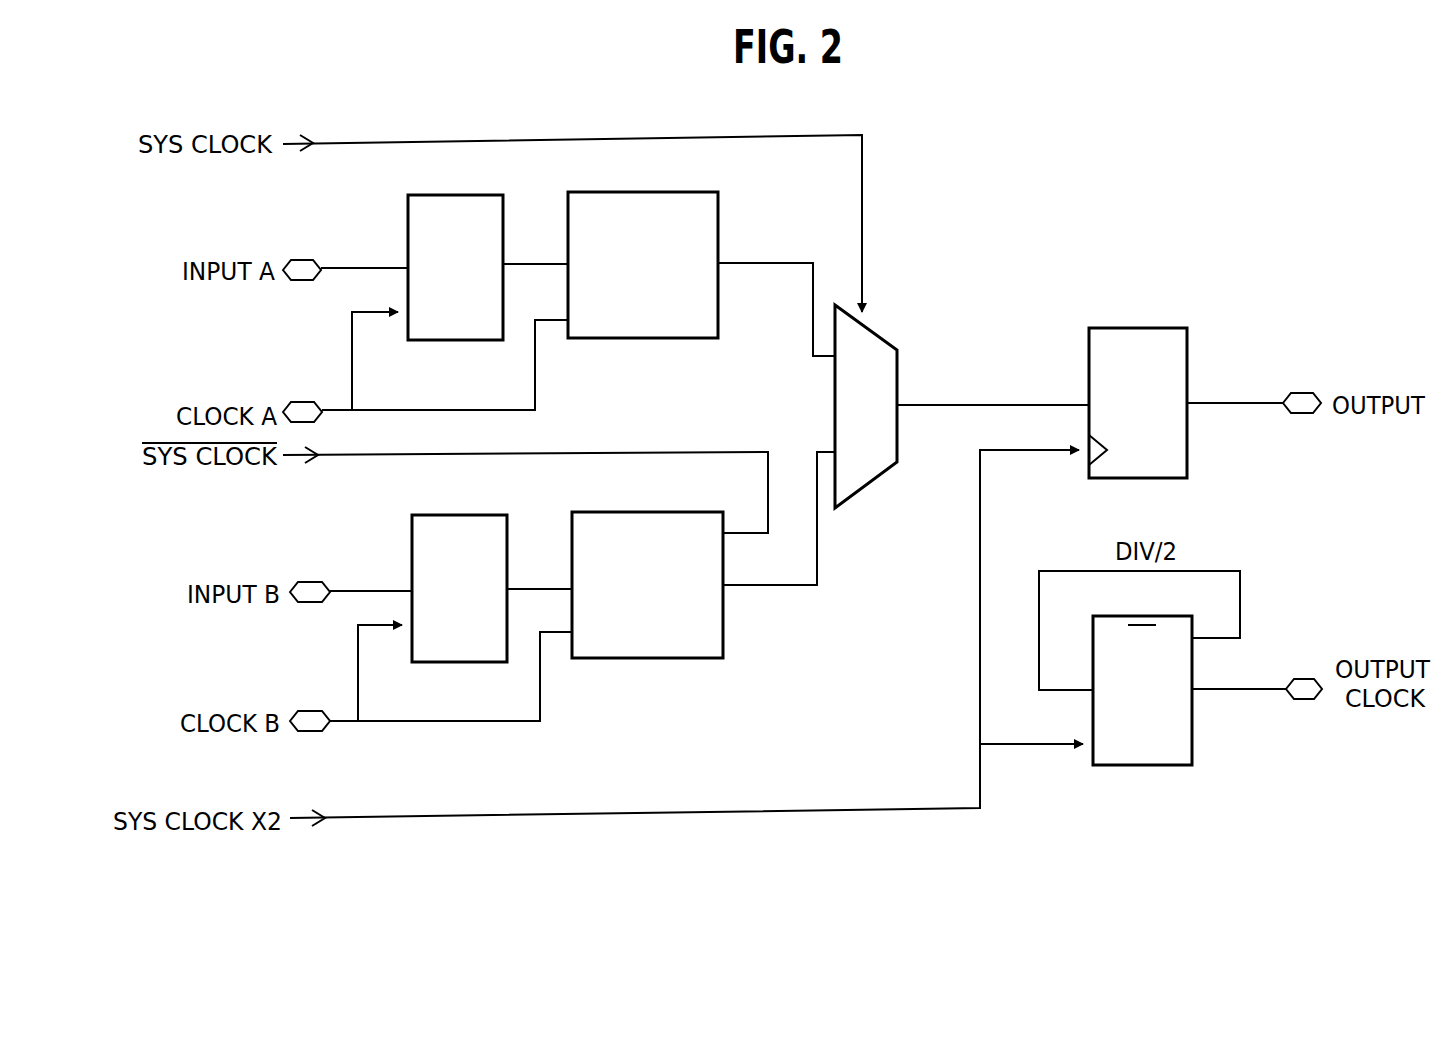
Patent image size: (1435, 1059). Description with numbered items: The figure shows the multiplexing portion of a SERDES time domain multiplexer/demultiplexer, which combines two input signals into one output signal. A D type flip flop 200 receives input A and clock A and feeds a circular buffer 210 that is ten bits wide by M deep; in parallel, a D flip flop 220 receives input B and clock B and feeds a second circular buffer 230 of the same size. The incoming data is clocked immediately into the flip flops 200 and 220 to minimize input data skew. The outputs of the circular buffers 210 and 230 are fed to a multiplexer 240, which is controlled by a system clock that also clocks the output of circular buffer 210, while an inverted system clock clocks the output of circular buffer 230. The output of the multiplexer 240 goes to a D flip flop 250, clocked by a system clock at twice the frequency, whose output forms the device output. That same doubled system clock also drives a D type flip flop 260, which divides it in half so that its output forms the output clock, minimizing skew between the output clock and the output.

The D type flip flop 200 is at (450, 195).
The circular buffer 210 is at (642, 192).
The D flip flop 220 is at (453, 516).
The circular buffer 230 is at (646, 512).
The multiplexer 240 is at (971, 387).
The D flip flop 250 is at (1187, 350).
The D type flip flop 260 is at (1192, 733).